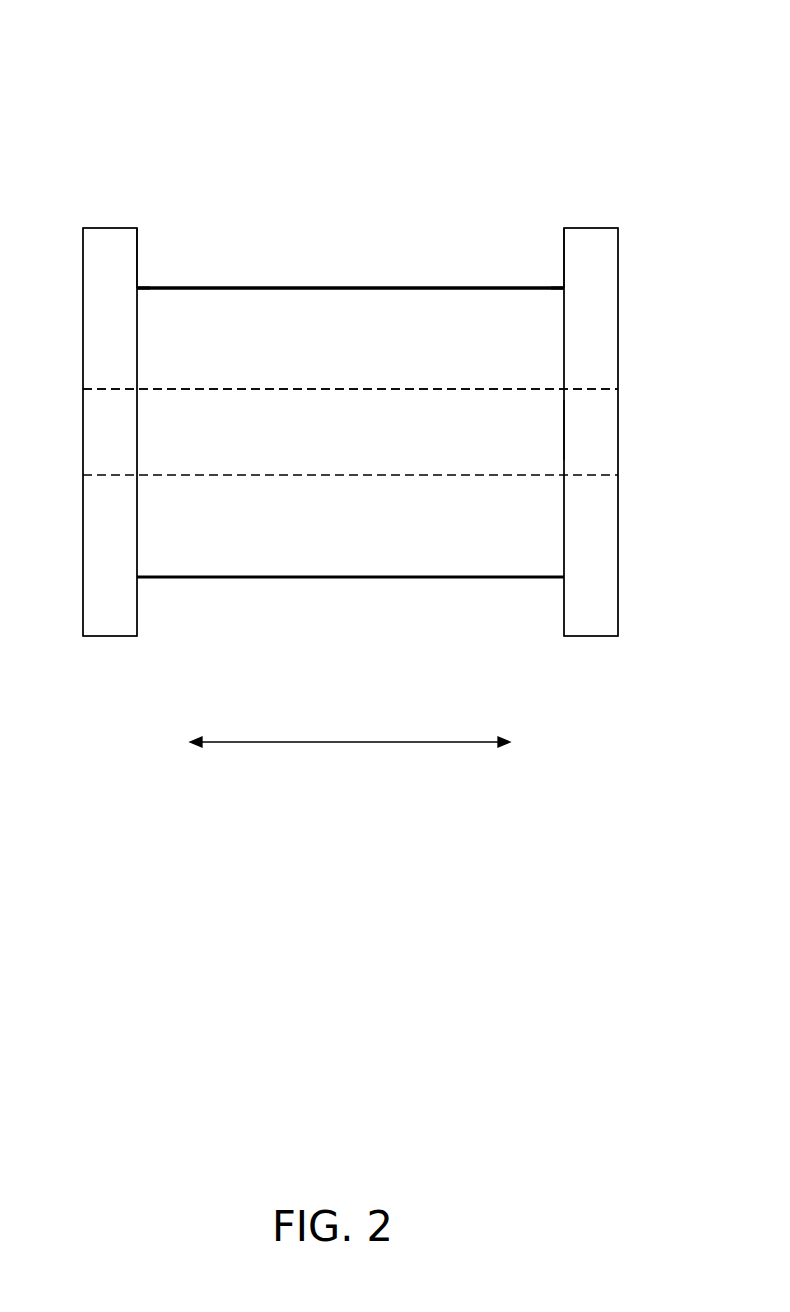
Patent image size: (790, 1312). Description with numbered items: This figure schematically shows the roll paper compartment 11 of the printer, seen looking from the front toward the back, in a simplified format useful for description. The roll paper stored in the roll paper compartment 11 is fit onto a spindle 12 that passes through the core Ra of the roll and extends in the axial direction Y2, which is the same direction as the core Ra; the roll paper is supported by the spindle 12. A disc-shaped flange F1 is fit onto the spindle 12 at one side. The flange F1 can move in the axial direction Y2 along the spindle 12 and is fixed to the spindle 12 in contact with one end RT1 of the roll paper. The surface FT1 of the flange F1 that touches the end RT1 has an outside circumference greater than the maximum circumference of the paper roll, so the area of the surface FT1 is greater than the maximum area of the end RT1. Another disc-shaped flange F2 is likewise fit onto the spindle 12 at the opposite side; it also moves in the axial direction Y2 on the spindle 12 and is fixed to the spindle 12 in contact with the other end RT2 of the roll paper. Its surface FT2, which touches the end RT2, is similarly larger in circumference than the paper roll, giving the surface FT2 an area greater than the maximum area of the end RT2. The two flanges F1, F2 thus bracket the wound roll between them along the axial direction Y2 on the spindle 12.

The roll paper compartment 11 is at (346, 79).
The spindle 12 is at (596, 428).
The flange F1 is at (108, 228).
The flange F2 is at (592, 228).
The surface FT1 is at (137, 248).
The surface FT2 is at (564, 248).
The end RT1 is at (137, 317).
The end RT2 is at (564, 317).
The core Ra is at (378, 388).
The axial direction Y2 is at (348, 742).